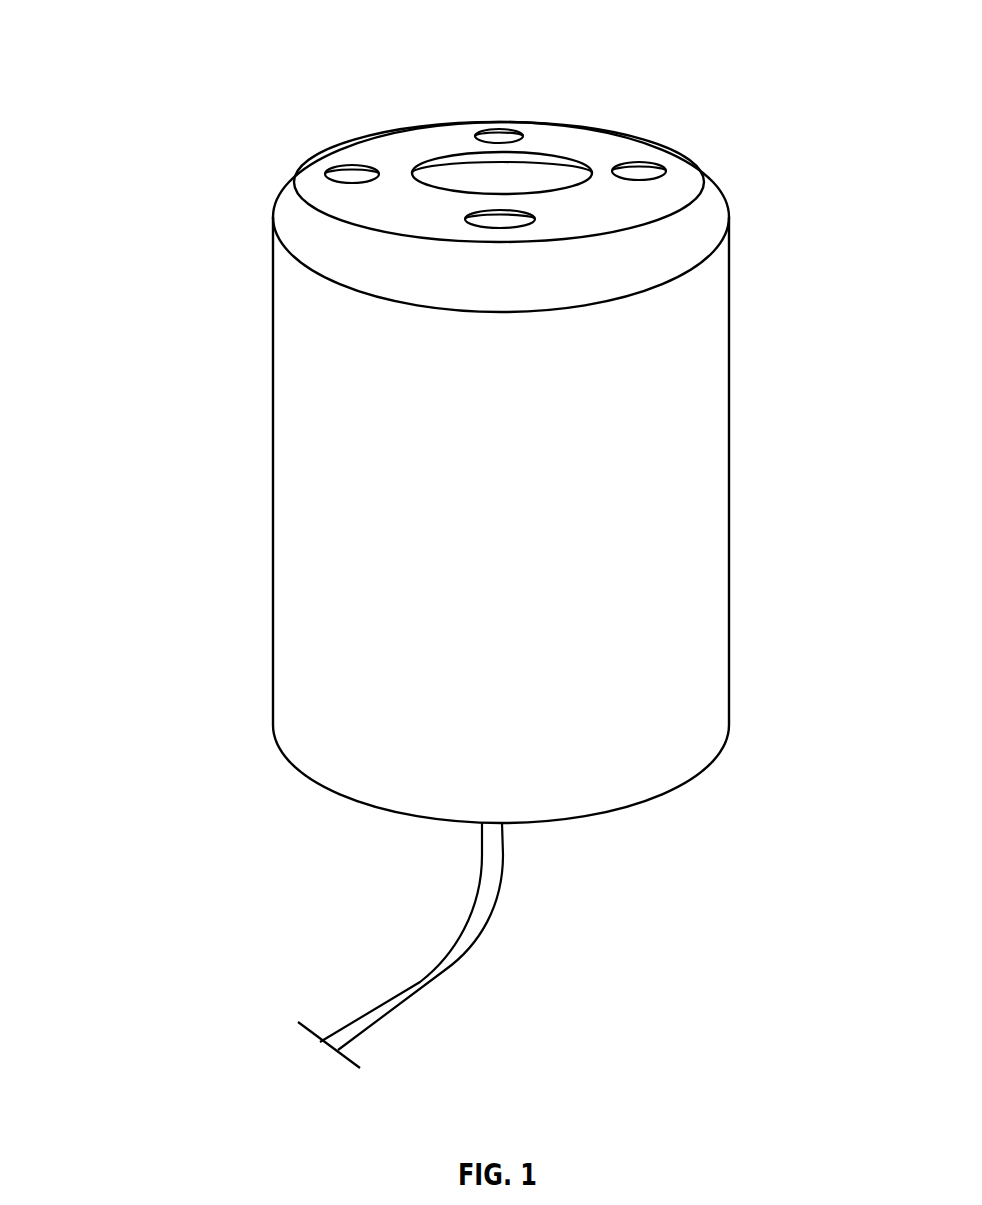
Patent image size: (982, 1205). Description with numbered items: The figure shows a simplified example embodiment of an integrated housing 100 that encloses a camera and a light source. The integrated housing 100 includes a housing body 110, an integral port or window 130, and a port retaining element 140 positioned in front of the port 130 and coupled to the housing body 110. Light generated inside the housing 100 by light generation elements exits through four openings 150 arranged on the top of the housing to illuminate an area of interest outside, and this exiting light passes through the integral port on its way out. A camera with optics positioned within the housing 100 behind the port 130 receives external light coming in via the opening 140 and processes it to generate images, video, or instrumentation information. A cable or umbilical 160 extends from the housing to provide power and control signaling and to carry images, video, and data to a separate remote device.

The integrated housing 100 is at (152, 119).
The housing body 110 is at (733, 357).
The integral port 130 is at (525, 178).
The port retaining element 140 is at (460, 152).
The openings 150 is at (342, 166).
The cable 160 is at (490, 927).